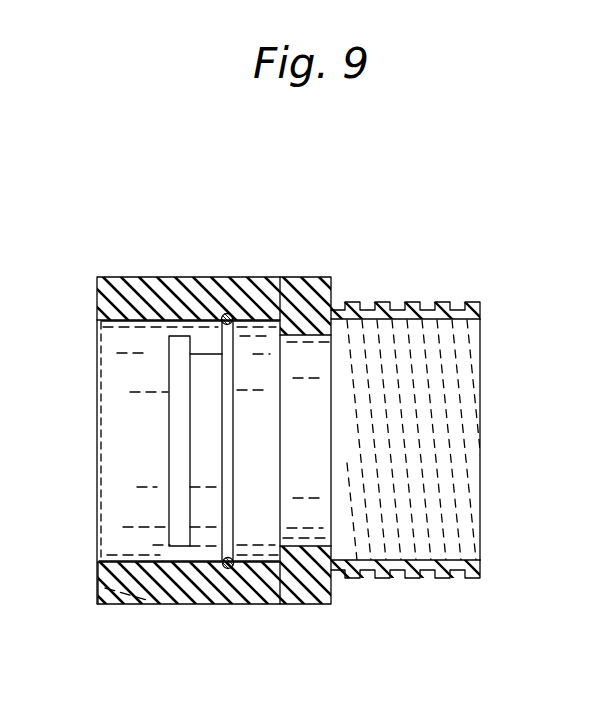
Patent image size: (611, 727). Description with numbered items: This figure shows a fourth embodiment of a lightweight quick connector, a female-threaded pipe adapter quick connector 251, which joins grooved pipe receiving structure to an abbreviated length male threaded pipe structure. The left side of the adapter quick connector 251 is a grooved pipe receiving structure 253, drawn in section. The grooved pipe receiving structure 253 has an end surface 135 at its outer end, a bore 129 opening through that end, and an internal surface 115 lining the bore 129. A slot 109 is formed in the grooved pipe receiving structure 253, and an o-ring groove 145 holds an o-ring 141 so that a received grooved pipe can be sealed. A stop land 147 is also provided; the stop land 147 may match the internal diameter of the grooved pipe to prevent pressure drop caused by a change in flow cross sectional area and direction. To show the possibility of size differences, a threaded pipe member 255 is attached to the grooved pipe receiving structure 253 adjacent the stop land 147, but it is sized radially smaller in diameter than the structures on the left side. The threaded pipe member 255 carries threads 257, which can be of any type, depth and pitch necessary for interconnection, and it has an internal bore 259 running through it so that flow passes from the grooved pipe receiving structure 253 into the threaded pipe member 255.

The female-threaded pipe adapter quick connector 251 is at (156, 200).
The grooved pipe receiving structure 253 is at (118, 273).
The threaded pipe member 255 is at (477, 268).
The threads 257 is at (383, 302).
The internal bore 259 is at (463, 535).
The internal surface 115 is at (175, 323).
The slot 109 is at (170, 423).
The o-ring groove 145 is at (233, 403).
The o-ring 141 is at (229, 324).
The stop land 147 is at (276, 331).
The bore 129 is at (133, 560).
The end surface 135 is at (98, 580).